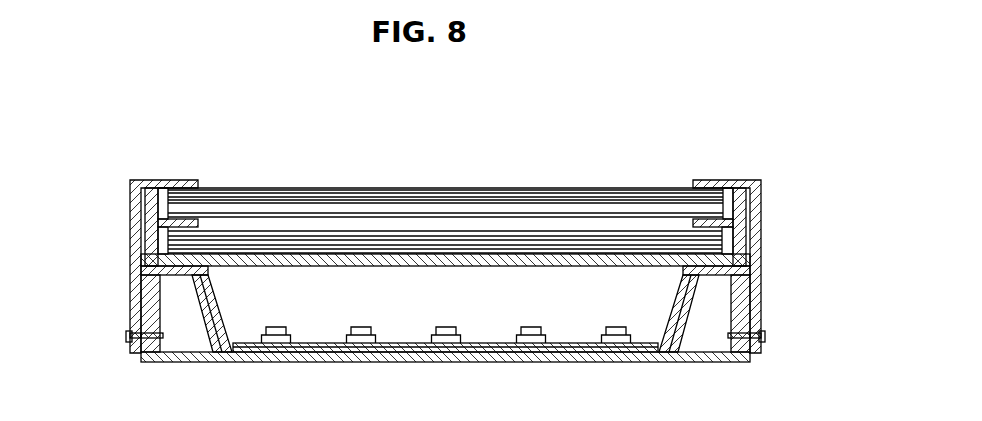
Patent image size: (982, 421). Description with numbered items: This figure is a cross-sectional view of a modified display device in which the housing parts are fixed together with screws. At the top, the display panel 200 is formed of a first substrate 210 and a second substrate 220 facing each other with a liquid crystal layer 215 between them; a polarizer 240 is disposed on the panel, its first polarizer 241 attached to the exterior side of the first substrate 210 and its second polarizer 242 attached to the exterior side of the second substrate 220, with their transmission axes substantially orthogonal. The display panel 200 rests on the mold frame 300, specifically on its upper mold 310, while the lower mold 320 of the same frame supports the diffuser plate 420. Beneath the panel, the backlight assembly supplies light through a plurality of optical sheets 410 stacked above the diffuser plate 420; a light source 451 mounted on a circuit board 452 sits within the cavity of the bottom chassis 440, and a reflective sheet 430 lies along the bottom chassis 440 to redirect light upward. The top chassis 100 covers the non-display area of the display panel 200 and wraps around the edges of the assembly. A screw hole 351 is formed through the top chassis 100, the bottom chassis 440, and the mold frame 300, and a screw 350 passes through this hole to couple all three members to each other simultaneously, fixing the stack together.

The top chassis 100 is at (727, 184).
The display panel 200 is at (445, 158).
The first substrate 210 is at (315, 143).
The liquid crystal layer 215 is at (428, 204).
The second substrate 220 is at (316, 196).
The polarizer 240 is at (445, 162).
The first polarizer 241 is at (484, 189).
The second polarizer 242 is at (485, 143).
The mold frame 300 is at (383, 270).
The upper mold 310 is at (153, 201).
The lower mold 320 is at (411, 309).
The screw 350 is at (126, 336).
The screw hole 351 is at (143, 340).
The optical sheets 410 is at (720, 252).
The diffuser plate 420 is at (740, 260).
The reflective sheet 430 is at (525, 354).
The bottom chassis 440 is at (362, 348).
The light source 451 is at (443, 331).
The circuit board 452 is at (447, 338).